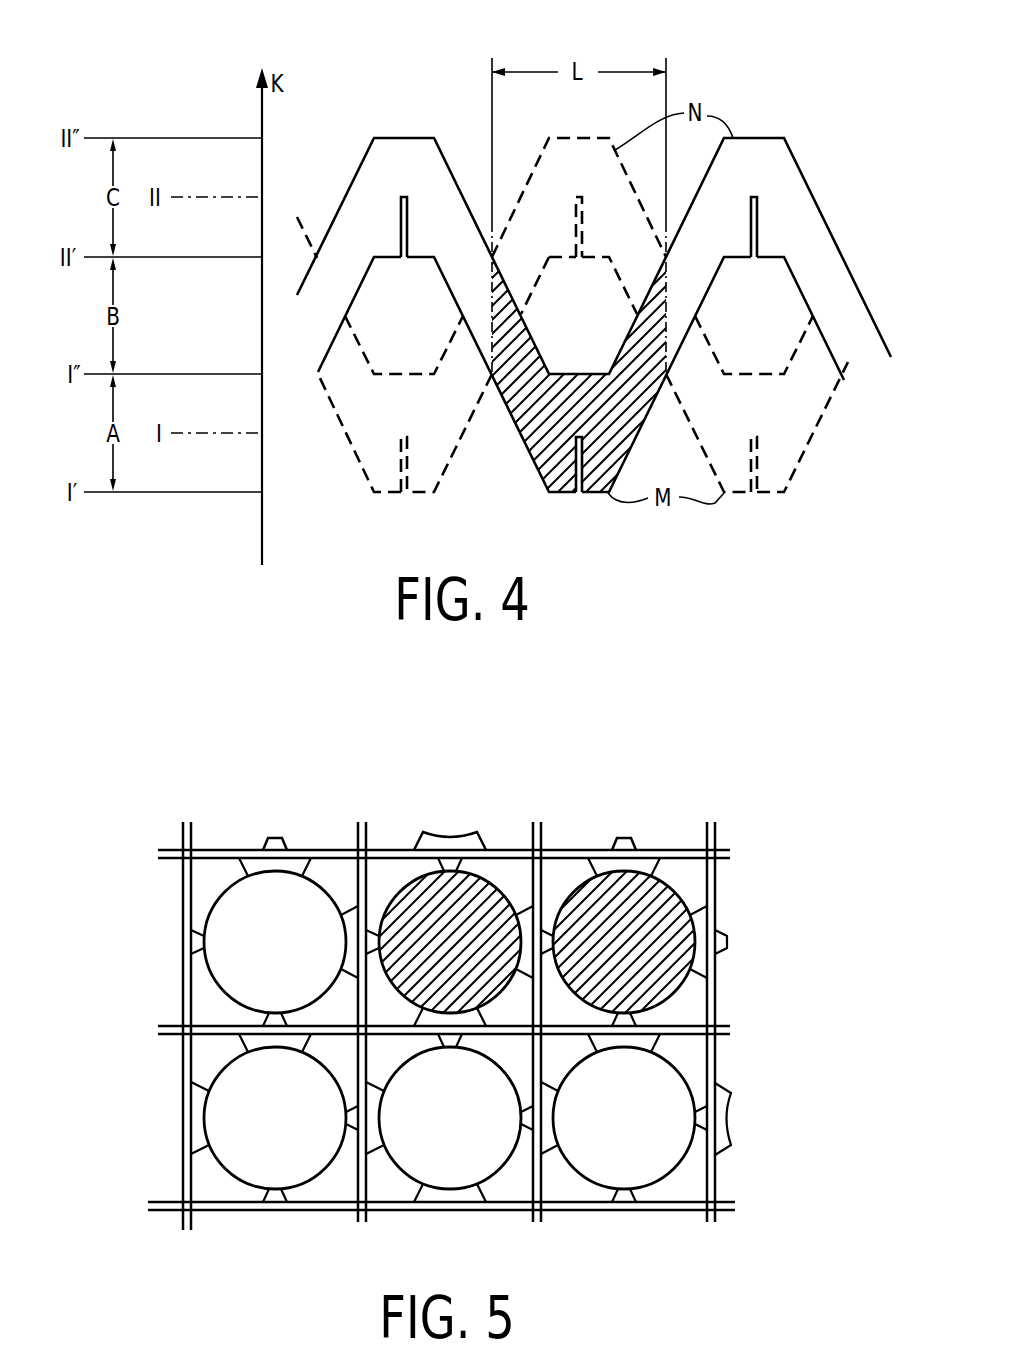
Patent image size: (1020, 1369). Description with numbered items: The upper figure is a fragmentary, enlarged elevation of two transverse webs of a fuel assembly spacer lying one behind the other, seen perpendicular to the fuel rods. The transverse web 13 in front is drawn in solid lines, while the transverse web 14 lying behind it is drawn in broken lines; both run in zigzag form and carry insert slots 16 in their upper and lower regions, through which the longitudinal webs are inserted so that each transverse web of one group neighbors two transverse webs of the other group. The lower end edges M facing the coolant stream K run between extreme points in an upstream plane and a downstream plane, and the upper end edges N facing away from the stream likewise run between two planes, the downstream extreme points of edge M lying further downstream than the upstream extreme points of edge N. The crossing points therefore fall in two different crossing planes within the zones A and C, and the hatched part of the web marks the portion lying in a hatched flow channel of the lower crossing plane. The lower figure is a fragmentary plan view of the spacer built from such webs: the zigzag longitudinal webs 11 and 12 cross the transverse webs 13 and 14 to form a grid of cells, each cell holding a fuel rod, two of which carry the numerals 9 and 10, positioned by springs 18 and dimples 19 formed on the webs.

In FIG. 5, the fuel rod 9 is at (405, 886).
In FIG. 5, the fuel rod 10 is at (675, 993).
In FIG. 5, the longitudinal web 11 is at (730, 1034).
In FIG. 5, the longitudinal web 12 is at (730, 858).
In FIG. 4, the transverse web 13 is at (433, 167).
In FIG. 5, the transverse web 13 is at (541, 1219).
In FIG. 4, the transverse web 14 is at (372, 452).
In FIG. 5, the transverse web 14 is at (366, 1218).
In FIG. 4, the insert slot 16 is at (408, 230).
In FIG. 5, the spring 18 is at (723, 1118).
In FIG. 5, the dimple 19 is at (728, 942).